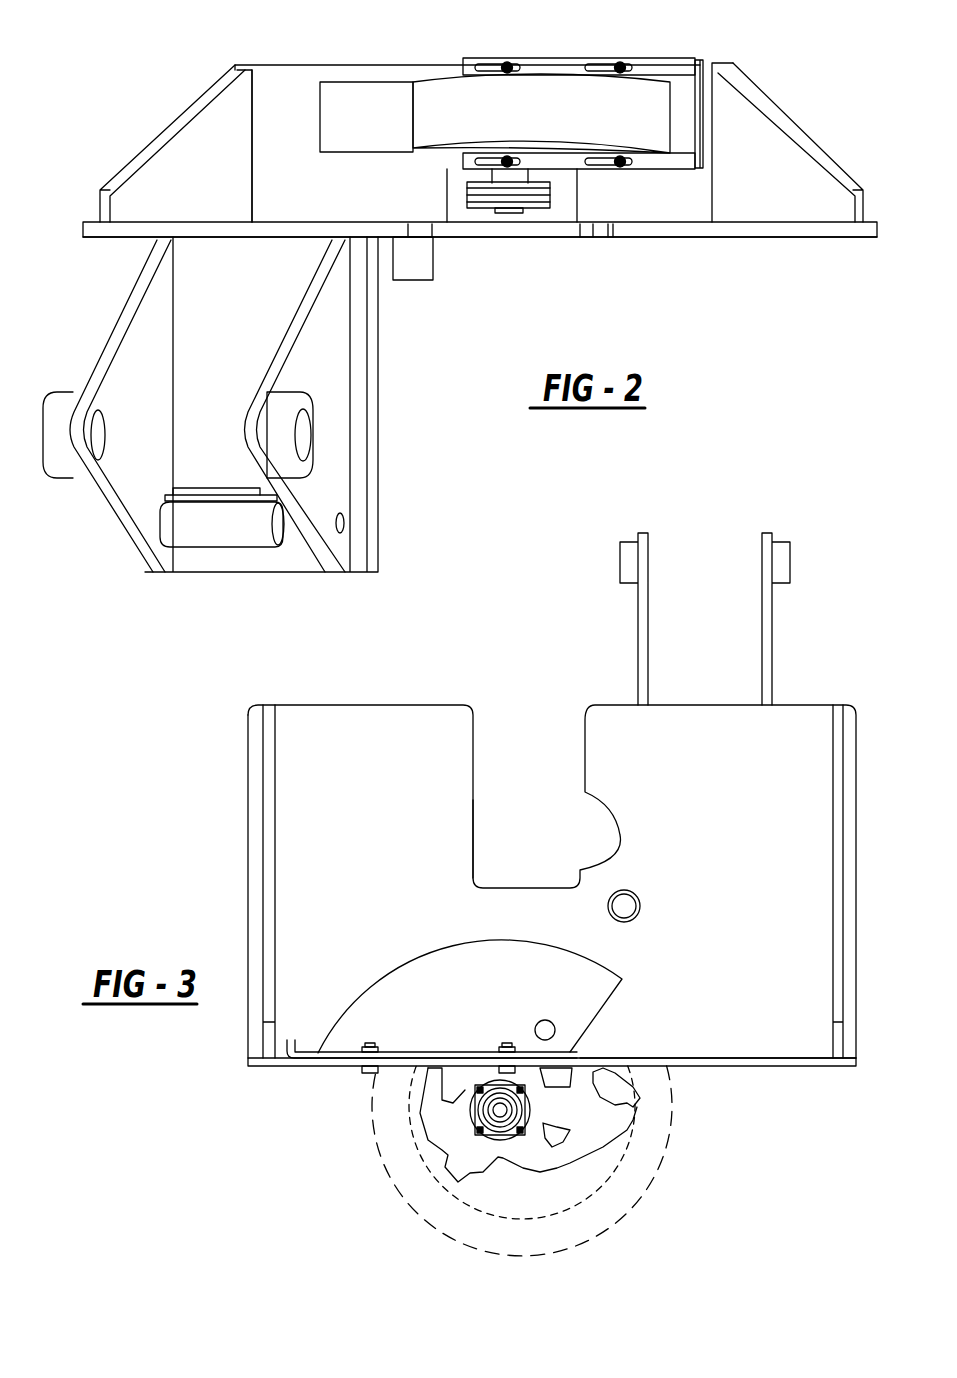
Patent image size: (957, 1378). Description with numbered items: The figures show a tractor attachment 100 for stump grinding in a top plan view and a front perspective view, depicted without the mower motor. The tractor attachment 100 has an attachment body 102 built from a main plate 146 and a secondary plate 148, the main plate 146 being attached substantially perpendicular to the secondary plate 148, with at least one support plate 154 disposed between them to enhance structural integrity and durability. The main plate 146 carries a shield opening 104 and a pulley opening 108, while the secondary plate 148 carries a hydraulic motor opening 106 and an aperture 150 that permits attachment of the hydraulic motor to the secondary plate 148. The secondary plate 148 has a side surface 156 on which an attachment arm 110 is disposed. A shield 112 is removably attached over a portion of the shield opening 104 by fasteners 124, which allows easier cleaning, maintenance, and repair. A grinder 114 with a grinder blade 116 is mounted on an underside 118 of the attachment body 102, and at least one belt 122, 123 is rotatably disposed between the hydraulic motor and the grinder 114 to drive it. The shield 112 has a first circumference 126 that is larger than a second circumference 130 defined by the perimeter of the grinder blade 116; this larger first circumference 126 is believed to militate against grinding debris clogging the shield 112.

In FIG. 2, the tractor attachment 100 is at (147, 52).
In FIG. 3, the tractor attachment 100 is at (198, 750).
In FIG. 2, the attachment body 102 is at (333, 62).
In FIG. 3, the attachment body 102 is at (400, 703).
In FIG. 2, the shield opening 104 is at (377, 92).
In FIG. 3, the hydraulic motor opening 106 is at (535, 770).
In FIG. 2, the pulley opening 108 is at (560, 212).
In FIG. 2, the attachment arm 110 is at (297, 521).
In FIG. 3, the attachment arm 110 is at (768, 648).
In FIG. 2, the shield 112 is at (572, 70).
In FIG. 3, the shield 112 is at (385, 975).
In FIG. 3, the grinder 114 is at (473, 1118).
In FIG. 3, the grinder blade 116 is at (437, 1147).
In FIG. 3, the underside 118 is at (822, 1068).
In FIG. 2, the belt 122 is at (488, 190).
In FIG. 2, the belt 123 is at (532, 200).
In FIG. 2, the fasteners 124 is at (508, 63).
In FIG. 3, the first circumference 126 is at (655, 1172).
In FIG. 3, the second circumference 130 is at (637, 1127).
In FIG. 2, the main plate 146 is at (283, 64).
In FIG. 3, the main plate 146 is at (723, 1064).
In FIG. 2, the secondary plate 148 is at (800, 238).
In FIG. 3, the secondary plate 148 is at (347, 705).
In FIG. 3, the aperture 150 is at (640, 903).
In FIG. 2, the support plate 154 is at (138, 155).
In FIG. 2, the side surface 156 is at (714, 241).